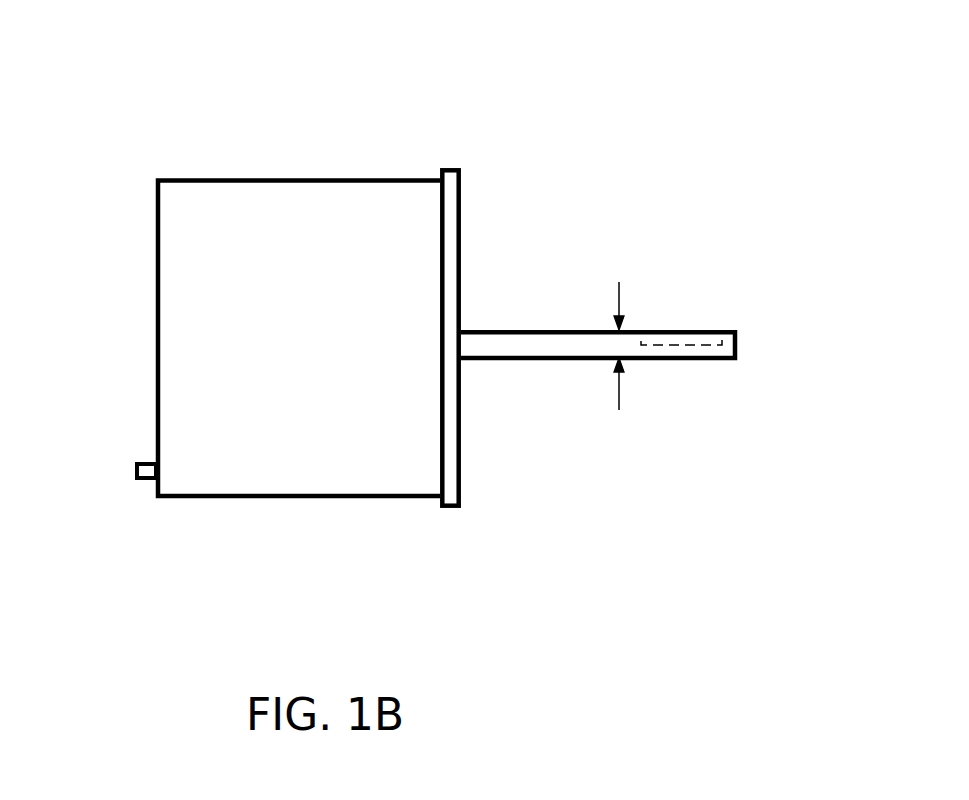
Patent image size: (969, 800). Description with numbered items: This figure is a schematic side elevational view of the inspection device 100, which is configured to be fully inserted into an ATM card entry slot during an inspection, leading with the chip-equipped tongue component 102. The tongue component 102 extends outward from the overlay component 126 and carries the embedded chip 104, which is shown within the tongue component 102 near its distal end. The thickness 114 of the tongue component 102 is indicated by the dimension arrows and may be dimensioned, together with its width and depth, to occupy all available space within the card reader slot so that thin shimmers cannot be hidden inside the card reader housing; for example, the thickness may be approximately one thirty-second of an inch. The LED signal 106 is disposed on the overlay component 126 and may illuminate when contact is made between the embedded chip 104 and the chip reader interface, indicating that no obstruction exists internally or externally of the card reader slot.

The inspection device 100 is at (452, 134).
The chip-equipped tongue component 102 is at (500, 330).
The chip 104 is at (680, 330).
The LED signal 106 is at (148, 462).
The thickness 114 is at (616, 346).
The overlay component 126 is at (461, 205).